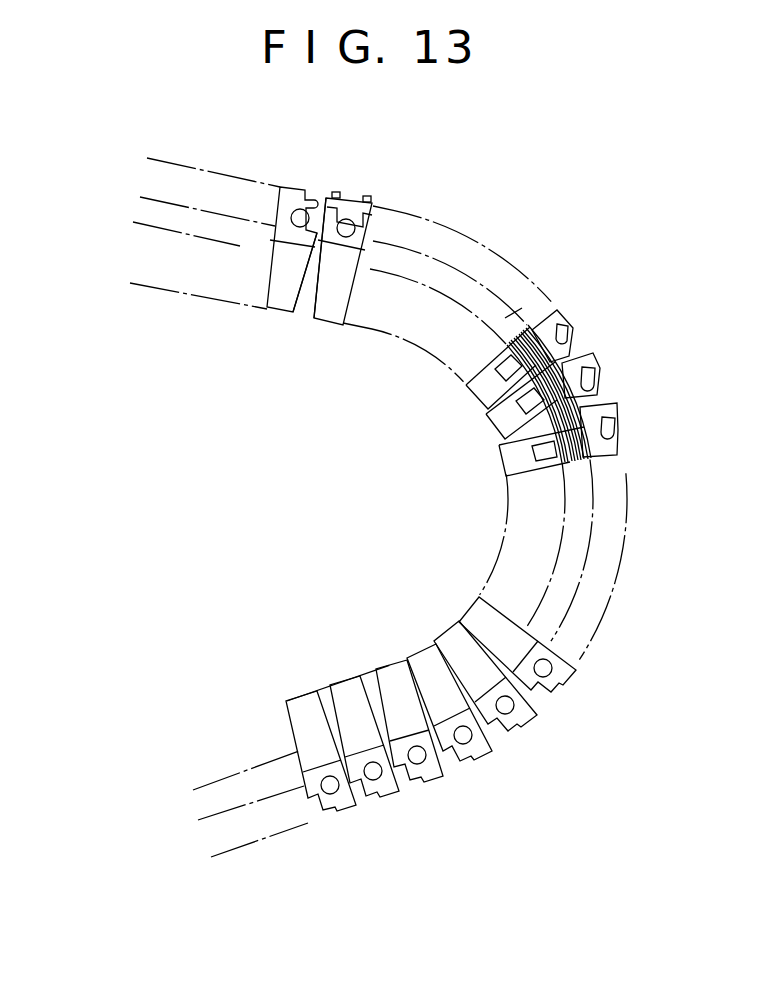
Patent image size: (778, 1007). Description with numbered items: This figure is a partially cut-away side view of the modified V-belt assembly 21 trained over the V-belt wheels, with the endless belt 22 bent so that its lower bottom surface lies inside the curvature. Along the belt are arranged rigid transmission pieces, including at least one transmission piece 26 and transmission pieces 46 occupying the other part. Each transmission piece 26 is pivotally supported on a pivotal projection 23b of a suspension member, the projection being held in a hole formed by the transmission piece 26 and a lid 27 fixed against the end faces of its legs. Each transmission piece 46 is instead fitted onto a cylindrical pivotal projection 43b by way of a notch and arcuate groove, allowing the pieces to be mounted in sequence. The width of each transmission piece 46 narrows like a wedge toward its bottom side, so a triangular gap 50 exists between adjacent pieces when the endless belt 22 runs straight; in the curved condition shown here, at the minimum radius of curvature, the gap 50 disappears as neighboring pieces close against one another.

The V-belt assembly 21 is at (586, 352).
The endless belt 22 is at (543, 284).
The pivotal projection 23b is at (381, 209).
The transmission piece 26 is at (380, 464).
The lid 27 is at (350, 203).
The pivotal projection 43b is at (297, 224).
The transmission piece 46 is at (348, 474).
The triangular gap 50 is at (303, 314).